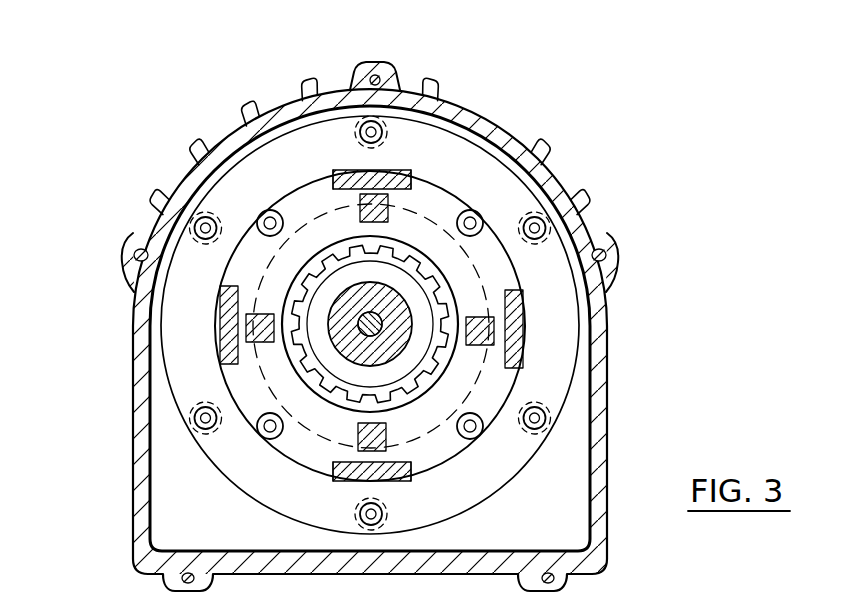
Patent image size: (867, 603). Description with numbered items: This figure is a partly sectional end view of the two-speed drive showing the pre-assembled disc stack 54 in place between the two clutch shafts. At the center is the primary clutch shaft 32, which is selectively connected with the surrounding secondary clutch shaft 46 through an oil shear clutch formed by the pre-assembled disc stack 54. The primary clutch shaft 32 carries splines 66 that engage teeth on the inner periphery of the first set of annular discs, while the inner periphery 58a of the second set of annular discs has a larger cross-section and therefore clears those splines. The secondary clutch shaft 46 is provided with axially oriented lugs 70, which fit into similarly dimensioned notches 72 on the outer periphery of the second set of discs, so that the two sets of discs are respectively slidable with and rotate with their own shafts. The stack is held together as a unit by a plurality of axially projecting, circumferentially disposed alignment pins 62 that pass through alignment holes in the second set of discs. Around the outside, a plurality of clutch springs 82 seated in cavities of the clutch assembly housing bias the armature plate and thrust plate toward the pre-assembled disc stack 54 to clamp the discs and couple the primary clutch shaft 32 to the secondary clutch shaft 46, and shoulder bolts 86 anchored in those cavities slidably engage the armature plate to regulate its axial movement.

The primary clutch shaft 32 is at (430, 305).
The secondary clutch shaft 46 is at (358, 200).
The pre-assembled disc stack 54 is at (455, 165).
The inner periphery of the second set of annular discs 58a is at (339, 252).
The alignment pins 62 is at (457, 225).
The splines 66 is at (437, 370).
The lugs 70 is at (350, 175).
The notches 72 is at (398, 172).
The clutch springs 82 is at (340, 105).
The shoulder bolts 86 is at (385, 125).